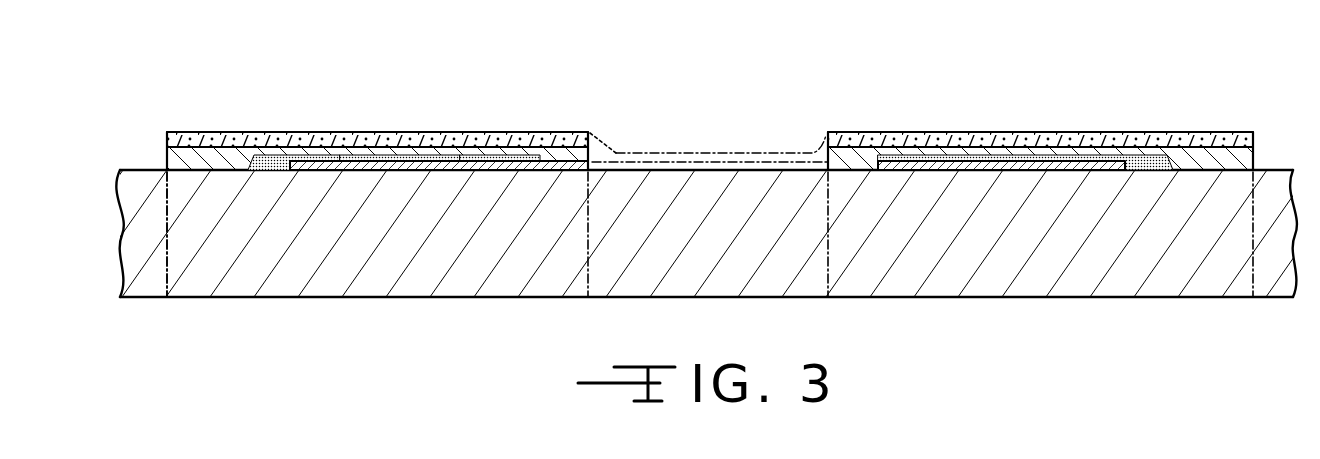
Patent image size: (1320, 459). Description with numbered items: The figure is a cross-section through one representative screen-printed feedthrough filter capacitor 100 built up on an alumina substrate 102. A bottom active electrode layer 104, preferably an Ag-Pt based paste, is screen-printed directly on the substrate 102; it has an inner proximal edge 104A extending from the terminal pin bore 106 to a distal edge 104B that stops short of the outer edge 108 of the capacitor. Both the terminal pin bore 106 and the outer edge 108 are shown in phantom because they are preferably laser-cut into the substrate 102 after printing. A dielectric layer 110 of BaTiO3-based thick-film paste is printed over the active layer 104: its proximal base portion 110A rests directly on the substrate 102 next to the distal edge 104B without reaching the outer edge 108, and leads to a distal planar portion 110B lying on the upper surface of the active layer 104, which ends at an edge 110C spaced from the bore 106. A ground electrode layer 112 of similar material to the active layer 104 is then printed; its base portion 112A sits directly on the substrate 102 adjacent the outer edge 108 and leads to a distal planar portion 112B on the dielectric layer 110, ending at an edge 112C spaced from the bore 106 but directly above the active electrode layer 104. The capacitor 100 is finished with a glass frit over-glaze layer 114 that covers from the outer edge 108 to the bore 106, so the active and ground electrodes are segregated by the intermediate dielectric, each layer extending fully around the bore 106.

The capacitor 100 is at (898, 90).
The substrate 102 is at (1178, 257).
The bottom active electrode layer 104 is at (510, 165).
The inner proximal edge of active electrode layer 104A is at (592, 163).
The distal edge of active electrode layer 104B is at (290, 163).
The terminal pin bore 106 is at (640, 163).
The outer edge of capacitor 108 is at (168, 262).
The dielectric layer 110 is at (1013, 157).
The proximal base portion of dielectric layer 110A is at (282, 160).
The distal planar portion of dielectric layer 110B is at (432, 158).
The edge of dielectric layer 110C is at (553, 152).
The ground electrode layer 112 is at (1207, 150).
The base portion of ground electrode layer 112A is at (197, 153).
The distal planar portion of ground electrode layer 112B is at (342, 153).
The edge of ground electrode layer 112C is at (403, 147).
The over-glaze layer 114 is at (743, 153).